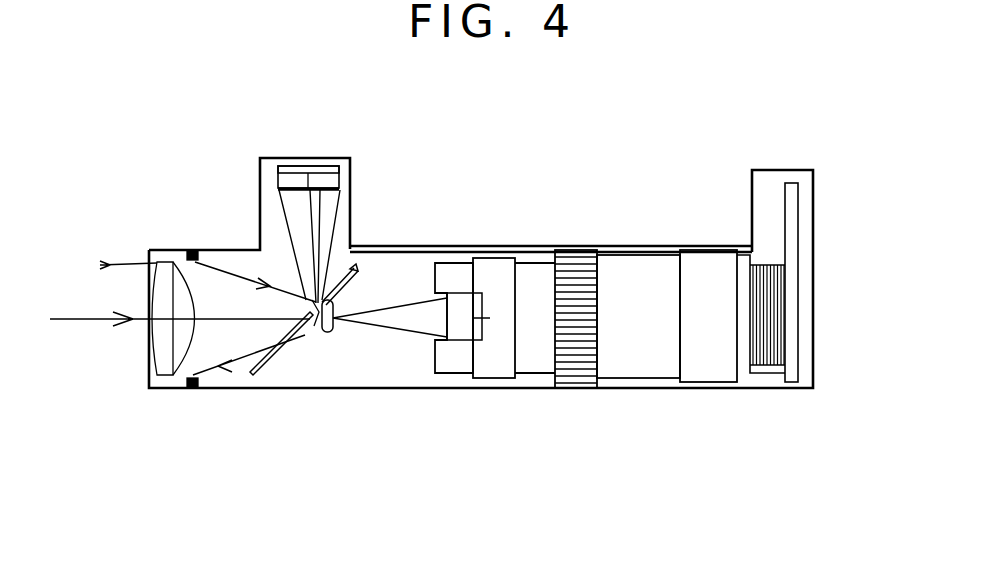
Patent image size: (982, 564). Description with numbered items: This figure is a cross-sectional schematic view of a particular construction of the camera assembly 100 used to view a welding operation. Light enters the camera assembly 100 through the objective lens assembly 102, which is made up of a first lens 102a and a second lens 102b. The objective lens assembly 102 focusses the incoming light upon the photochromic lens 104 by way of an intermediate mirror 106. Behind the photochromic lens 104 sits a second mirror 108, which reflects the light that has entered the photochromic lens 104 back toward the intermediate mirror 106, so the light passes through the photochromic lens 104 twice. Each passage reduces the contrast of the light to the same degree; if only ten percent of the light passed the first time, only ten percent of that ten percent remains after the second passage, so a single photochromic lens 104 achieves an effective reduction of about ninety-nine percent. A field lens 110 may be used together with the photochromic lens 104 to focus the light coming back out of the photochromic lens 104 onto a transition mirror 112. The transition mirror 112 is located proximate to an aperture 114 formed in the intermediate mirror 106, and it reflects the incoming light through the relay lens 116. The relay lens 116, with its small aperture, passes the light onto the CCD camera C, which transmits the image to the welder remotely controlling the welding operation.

The camera assembly 100 is at (386, 389).
The objective lens assembly 102 is at (172, 345).
The first lens 102a is at (160, 357).
The second lens 102b is at (187, 357).
The photochromic lens 104 is at (328, 180).
The intermediate mirror 106 is at (352, 263).
The second mirror 108 is at (316, 167).
The field lens 110 is at (303, 191).
The transition mirror 112 is at (318, 330).
The aperture 114 is at (320, 296).
The relay lens 116 is at (333, 327).
The CCD camera C is at (641, 270).